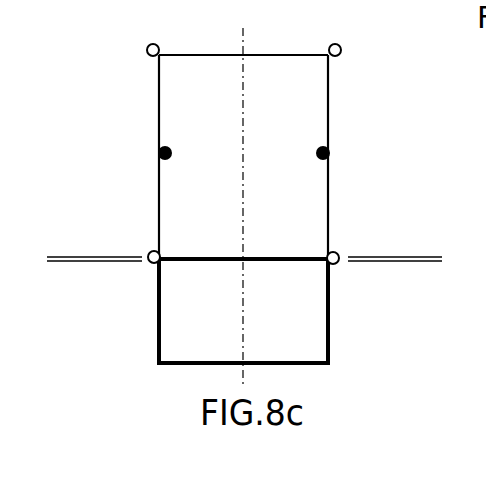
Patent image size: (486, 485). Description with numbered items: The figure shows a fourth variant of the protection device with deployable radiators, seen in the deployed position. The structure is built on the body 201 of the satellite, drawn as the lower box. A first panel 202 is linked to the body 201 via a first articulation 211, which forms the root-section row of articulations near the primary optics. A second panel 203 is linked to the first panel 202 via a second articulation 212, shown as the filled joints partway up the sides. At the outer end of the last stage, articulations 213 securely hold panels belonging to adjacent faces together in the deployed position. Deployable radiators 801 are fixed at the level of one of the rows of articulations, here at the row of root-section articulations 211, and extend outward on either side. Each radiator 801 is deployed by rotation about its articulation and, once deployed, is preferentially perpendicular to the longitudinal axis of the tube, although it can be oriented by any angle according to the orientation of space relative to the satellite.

The body 201 is at (315, 350).
The first panel 202 is at (158, 198).
The second panel 203 is at (158, 95).
The first articulation 211 is at (149, 251).
The second articulation 212 is at (158, 152).
The articulation 213 is at (148, 45).
The deployable radiator 801 is at (93, 263).